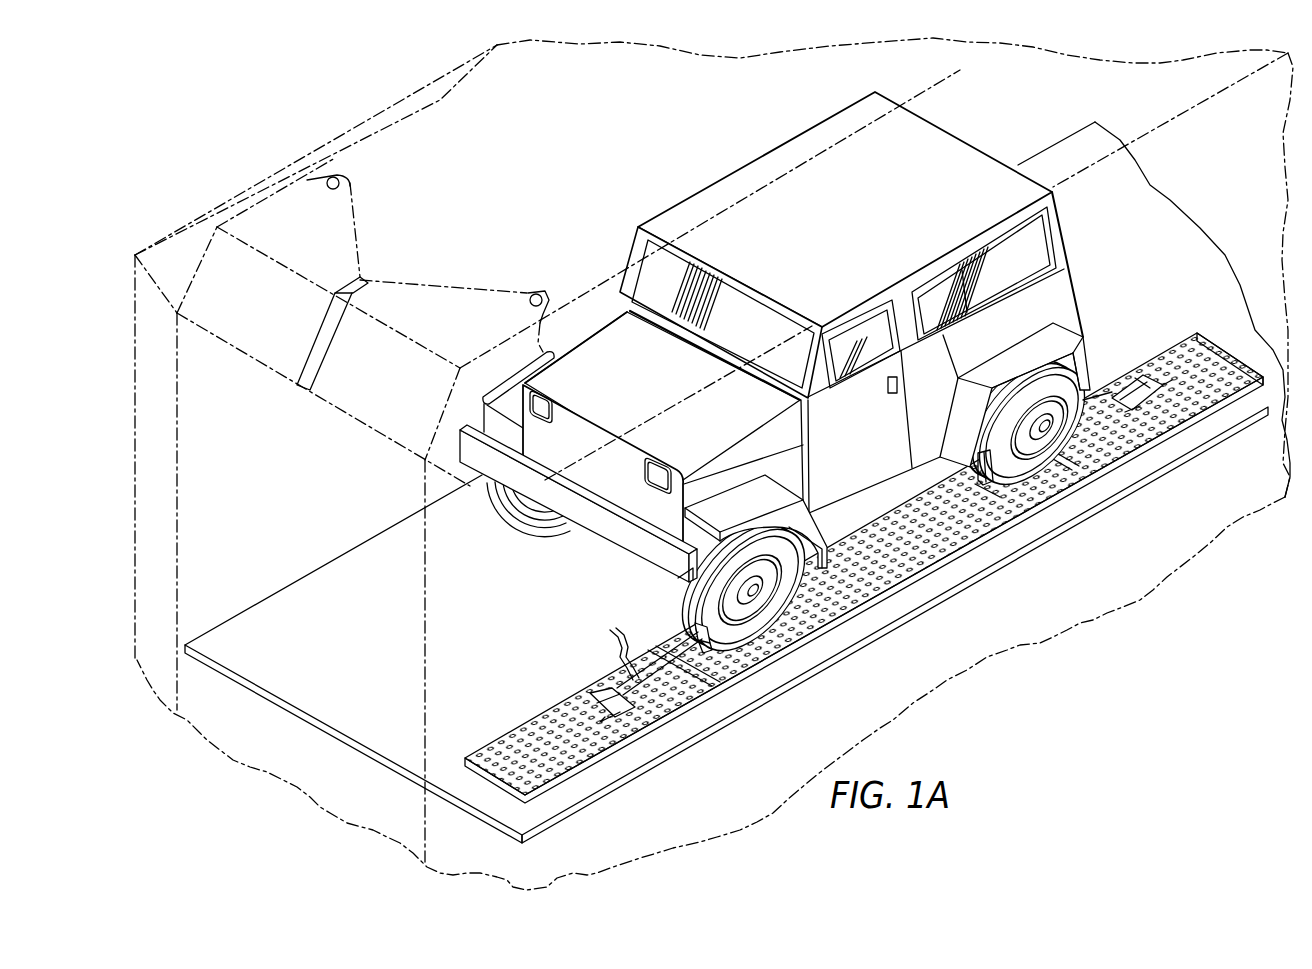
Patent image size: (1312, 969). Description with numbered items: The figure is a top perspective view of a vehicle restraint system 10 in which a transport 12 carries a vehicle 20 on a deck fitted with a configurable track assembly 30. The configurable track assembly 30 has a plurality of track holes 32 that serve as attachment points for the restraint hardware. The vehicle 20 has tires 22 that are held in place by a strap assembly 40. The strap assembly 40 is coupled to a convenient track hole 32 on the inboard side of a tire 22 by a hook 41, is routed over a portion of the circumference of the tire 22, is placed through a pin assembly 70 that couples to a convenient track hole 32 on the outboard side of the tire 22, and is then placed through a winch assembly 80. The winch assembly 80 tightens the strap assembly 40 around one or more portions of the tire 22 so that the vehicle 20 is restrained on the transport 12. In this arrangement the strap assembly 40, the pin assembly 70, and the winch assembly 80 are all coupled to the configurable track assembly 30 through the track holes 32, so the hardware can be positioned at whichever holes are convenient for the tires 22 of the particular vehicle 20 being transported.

The vehicle restraint system 10 is at (143, 108).
The transport 12 is at (357, 125).
The vehicle 20 is at (708, 197).
The tire 22 is at (518, 528).
The configurable track assembly 30 is at (1182, 345).
The track hole 32 is at (1211, 352).
The strap assembly 40 is at (655, 636).
The hook 41 is at (981, 486).
The pin assembly 70 is at (693, 624).
The winch assembly 80 is at (597, 694).